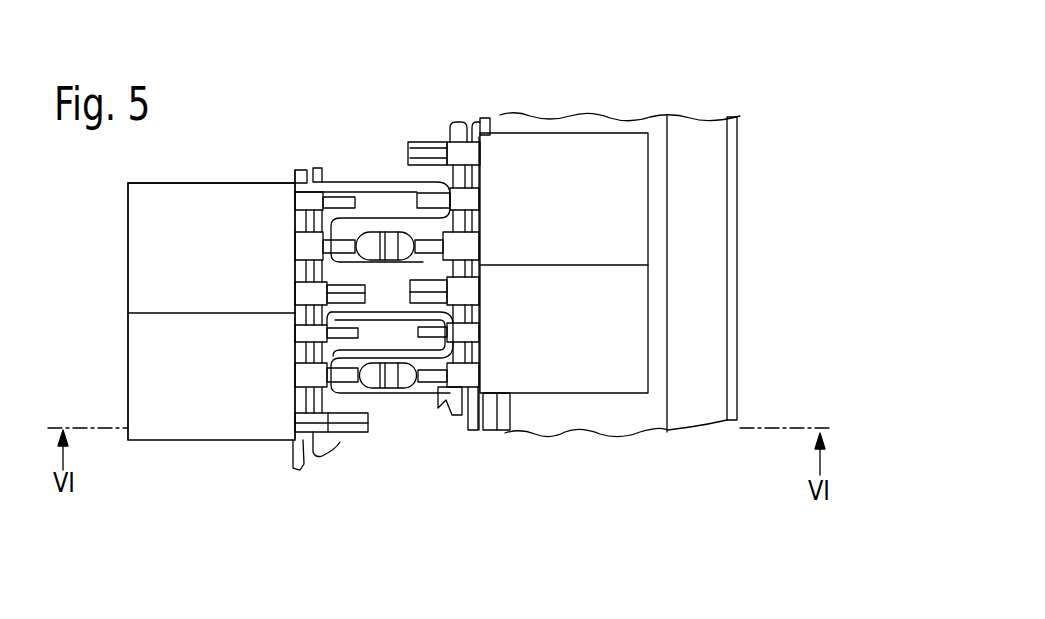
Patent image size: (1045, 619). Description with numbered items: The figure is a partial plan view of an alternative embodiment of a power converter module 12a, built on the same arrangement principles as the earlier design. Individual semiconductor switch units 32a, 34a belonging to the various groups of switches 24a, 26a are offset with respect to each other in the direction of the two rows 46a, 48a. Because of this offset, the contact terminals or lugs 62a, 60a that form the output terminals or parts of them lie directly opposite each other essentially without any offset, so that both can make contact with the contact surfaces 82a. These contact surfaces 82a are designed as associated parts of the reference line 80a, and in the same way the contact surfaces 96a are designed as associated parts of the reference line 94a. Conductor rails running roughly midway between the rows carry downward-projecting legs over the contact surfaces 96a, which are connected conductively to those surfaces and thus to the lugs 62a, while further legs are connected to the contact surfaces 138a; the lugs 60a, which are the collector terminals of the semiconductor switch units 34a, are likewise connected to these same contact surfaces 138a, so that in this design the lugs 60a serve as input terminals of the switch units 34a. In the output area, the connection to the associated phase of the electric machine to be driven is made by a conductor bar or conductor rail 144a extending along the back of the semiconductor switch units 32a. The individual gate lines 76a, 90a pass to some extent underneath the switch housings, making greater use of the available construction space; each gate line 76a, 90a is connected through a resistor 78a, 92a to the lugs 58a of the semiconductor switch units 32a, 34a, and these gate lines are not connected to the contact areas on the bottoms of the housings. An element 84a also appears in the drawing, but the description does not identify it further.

The converter module 12a is at (683, 40).
The group of switches 24a is at (118, 218).
The group of switches 26a is at (115, 325).
The semiconductor switch unit 32a is at (599, 147).
The semiconductor switch unit 34a is at (218, 187).
The row 46a is at (576, 53).
The row 48a is at (212, 74).
The lug 58a is at (480, 290).
The lug 60a is at (480, 332).
The lug 62a is at (316, 200).
The gate line 76a is at (296, 464).
The resistor 78a is at (362, 434).
The reference line 80a is at (320, 448).
The contact surface 82a is at (365, 193).
The housing wall 84a is at (657, 127).
The gate line 90a is at (483, 119).
The resistor 92a is at (427, 142).
The reference line 94a is at (458, 121).
The contact surface 96a is at (441, 392).
The contact surface 138a is at (340, 240).
The conductor rail 144a is at (707, 233).